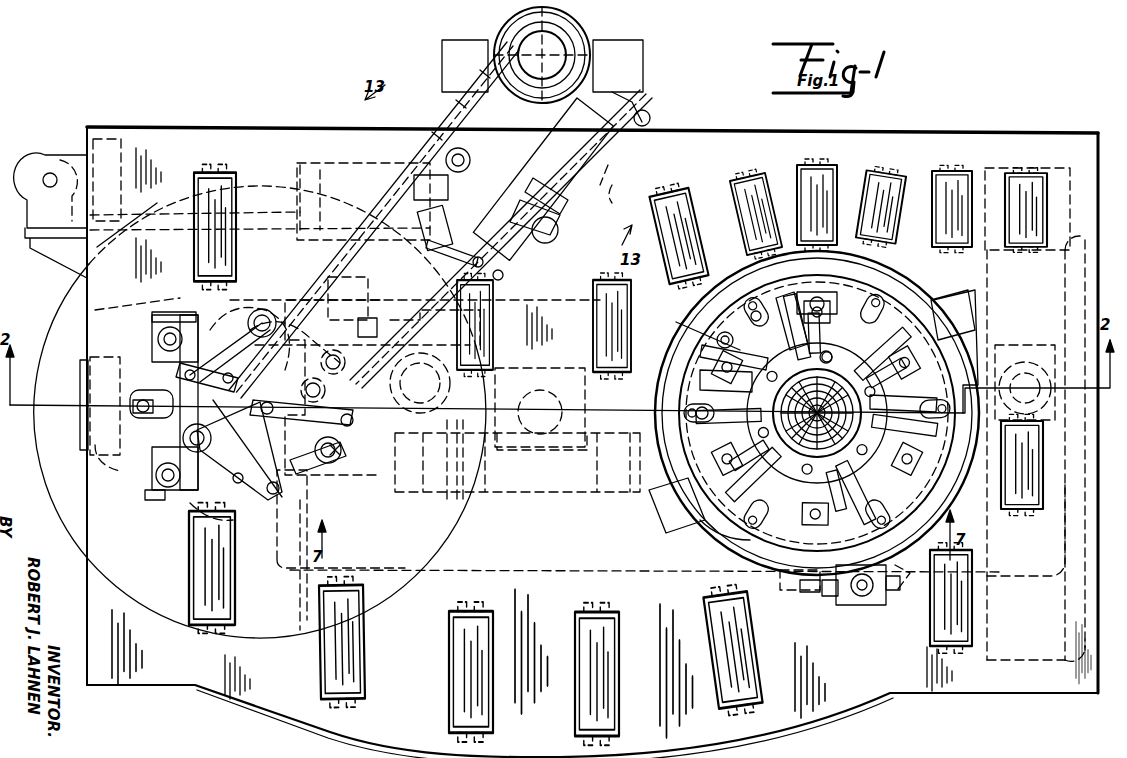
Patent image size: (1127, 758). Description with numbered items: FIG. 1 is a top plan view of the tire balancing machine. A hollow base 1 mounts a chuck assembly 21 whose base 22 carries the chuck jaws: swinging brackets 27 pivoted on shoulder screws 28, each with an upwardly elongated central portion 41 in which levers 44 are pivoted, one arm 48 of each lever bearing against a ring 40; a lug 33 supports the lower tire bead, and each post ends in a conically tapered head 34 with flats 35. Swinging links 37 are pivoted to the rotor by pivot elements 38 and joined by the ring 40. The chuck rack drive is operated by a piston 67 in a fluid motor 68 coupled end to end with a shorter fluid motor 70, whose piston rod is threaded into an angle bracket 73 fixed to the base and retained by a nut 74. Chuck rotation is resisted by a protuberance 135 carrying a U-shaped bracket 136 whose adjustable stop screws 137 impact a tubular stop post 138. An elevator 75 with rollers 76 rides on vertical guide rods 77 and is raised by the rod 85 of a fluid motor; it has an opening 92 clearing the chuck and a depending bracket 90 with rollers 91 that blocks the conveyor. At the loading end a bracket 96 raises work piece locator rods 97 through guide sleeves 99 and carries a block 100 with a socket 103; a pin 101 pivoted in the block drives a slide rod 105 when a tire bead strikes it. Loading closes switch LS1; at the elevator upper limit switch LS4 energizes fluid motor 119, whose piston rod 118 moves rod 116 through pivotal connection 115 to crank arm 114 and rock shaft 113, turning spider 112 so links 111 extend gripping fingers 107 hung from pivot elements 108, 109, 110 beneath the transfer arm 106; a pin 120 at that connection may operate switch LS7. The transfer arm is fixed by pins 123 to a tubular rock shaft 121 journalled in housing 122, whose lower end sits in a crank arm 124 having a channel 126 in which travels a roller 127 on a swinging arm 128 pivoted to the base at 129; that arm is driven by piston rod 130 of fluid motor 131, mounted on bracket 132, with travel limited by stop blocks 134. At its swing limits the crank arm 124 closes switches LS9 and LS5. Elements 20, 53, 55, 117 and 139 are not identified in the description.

The base 1 is at (424, 580).
The turret head 20 is at (766, 474).
The chuck assembly 21 is at (672, 396).
The base 22 is at (690, 374).
The swinging brackets 27 is at (698, 348).
The shoulder screws 28 is at (695, 414).
The lug 33 is at (824, 287).
The conically tapered head 34 is at (691, 329).
The flats 35 is at (732, 342).
The swinging link 37 is at (826, 304).
The pivot element 38 is at (830, 353).
The ring 40 is at (877, 401).
The central portion 41 is at (800, 292).
The levers 44 is at (756, 310).
The arm 48 is at (765, 418).
The casing bracket 53 is at (722, 516).
The casing lug 55 is at (660, 506).
The piston 67 is at (640, 498).
The fluid motor 68 is at (538, 498).
The shorter fluid motor 70 is at (416, 491).
The angle bracket 73 is at (333, 533).
The nut 74 is at (350, 485).
The elevator 75 is at (198, 688).
The rollers 76 is at (214, 619).
The vertical guide rods 77 is at (445, 390).
The rod 85 is at (540, 399).
The bracket 90 is at (90, 450).
The rollers 91 is at (82, 452).
The opening 92 is at (921, 291).
The bracket 96 is at (150, 492).
The work piece locator rods 97 is at (151, 332).
The guide sleeves 99 is at (187, 310).
The block 100 is at (136, 400).
The pin 101 is at (138, 416).
The socket 103 is at (141, 470).
The slide rod 105 is at (168, 340).
The transfer arm 106 is at (352, 221).
The gripping fingers 107 is at (260, 315).
The pivot element 108 is at (242, 372).
The pivot element 109 is at (338, 353).
The pivot element 110 is at (270, 496).
The links 111 is at (234, 400).
The spider 112 is at (311, 382).
The rock shaft 113 is at (230, 416).
The crank arm 114 is at (346, 442).
The pivotal connection 115 is at (378, 412).
The rod 116 is at (425, 275).
The slide block 117 is at (490, 250).
The piston rod 118 is at (548, 191).
The fluid motor 119 is at (580, 161).
The pin 120 is at (548, 238).
The tubular rock shaft 121 is at (575, 34).
The tubular housing 122 is at (608, 38).
The pins 123 is at (507, 30).
The crank arm 124 is at (385, 85).
The channel 126 is at (542, 55).
The roller 127 is at (445, 172).
The swinging arm 128 is at (476, 184).
The pivot 129 is at (600, 174).
The piston rod 130 is at (370, 152).
The fluid motor 131 is at (172, 130).
The bracket 132 is at (68, 260).
The stop blocks 134 is at (628, 193).
The protuberance 135 is at (796, 585).
The U-shaped bracket 136 is at (850, 606).
The adjustable stop screws 137 is at (828, 601).
The tubular stop post 138 is at (894, 598).
The switch lever 139 is at (913, 582).
The switch LS1 is at (352, 307).
The switch LS4 is at (1046, 510).
The switch LS5 is at (645, 103).
The switch LS7 is at (500, 278).
The switch LS9 is at (440, 55).